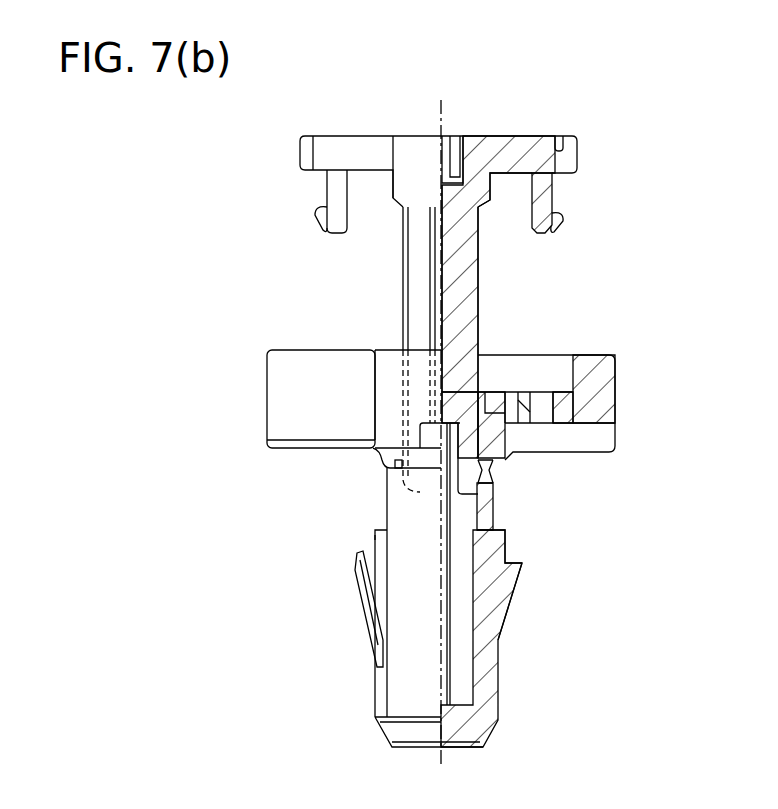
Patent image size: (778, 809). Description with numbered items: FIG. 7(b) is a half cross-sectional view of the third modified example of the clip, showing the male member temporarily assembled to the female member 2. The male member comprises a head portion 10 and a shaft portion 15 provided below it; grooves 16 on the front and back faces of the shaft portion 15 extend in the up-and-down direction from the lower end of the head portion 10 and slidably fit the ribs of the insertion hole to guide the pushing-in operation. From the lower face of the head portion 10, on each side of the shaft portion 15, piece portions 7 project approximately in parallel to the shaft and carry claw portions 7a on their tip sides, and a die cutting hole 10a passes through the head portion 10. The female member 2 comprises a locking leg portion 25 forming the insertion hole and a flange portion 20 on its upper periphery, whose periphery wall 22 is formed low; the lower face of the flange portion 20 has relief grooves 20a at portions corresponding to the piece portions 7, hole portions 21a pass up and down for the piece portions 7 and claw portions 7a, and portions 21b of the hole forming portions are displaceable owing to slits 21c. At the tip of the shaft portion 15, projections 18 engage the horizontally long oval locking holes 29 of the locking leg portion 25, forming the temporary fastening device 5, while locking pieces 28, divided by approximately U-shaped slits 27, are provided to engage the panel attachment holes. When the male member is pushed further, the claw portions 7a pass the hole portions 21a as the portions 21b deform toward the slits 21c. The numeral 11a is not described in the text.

The head portion 10 is at (360, 131).
The hole 11a is at (450, 160).
The die cutting hole 10a is at (558, 140).
The piece portion 7 is at (326, 186).
The claw portion 7a is at (317, 213).
The shaft portion 15 is at (480, 272).
The groove 16 is at (440, 289).
The periphery wall 22 is at (622, 371).
The relief groove 20a is at (606, 436).
The hole portion 21a is at (546, 400).
The portion of hole forming portion 21b is at (527, 392).
The slit 21c is at (508, 392).
The female member 2 is at (262, 470).
The flange portion 20 is at (337, 448).
The locking leg portion 25 is at (393, 503).
The projection 18 is at (492, 470).
The locking hole 29 is at (496, 500).
The temporary fastening device 5 is at (590, 470).
The slit 27 is at (506, 533).
The locking piece 28 is at (518, 577).